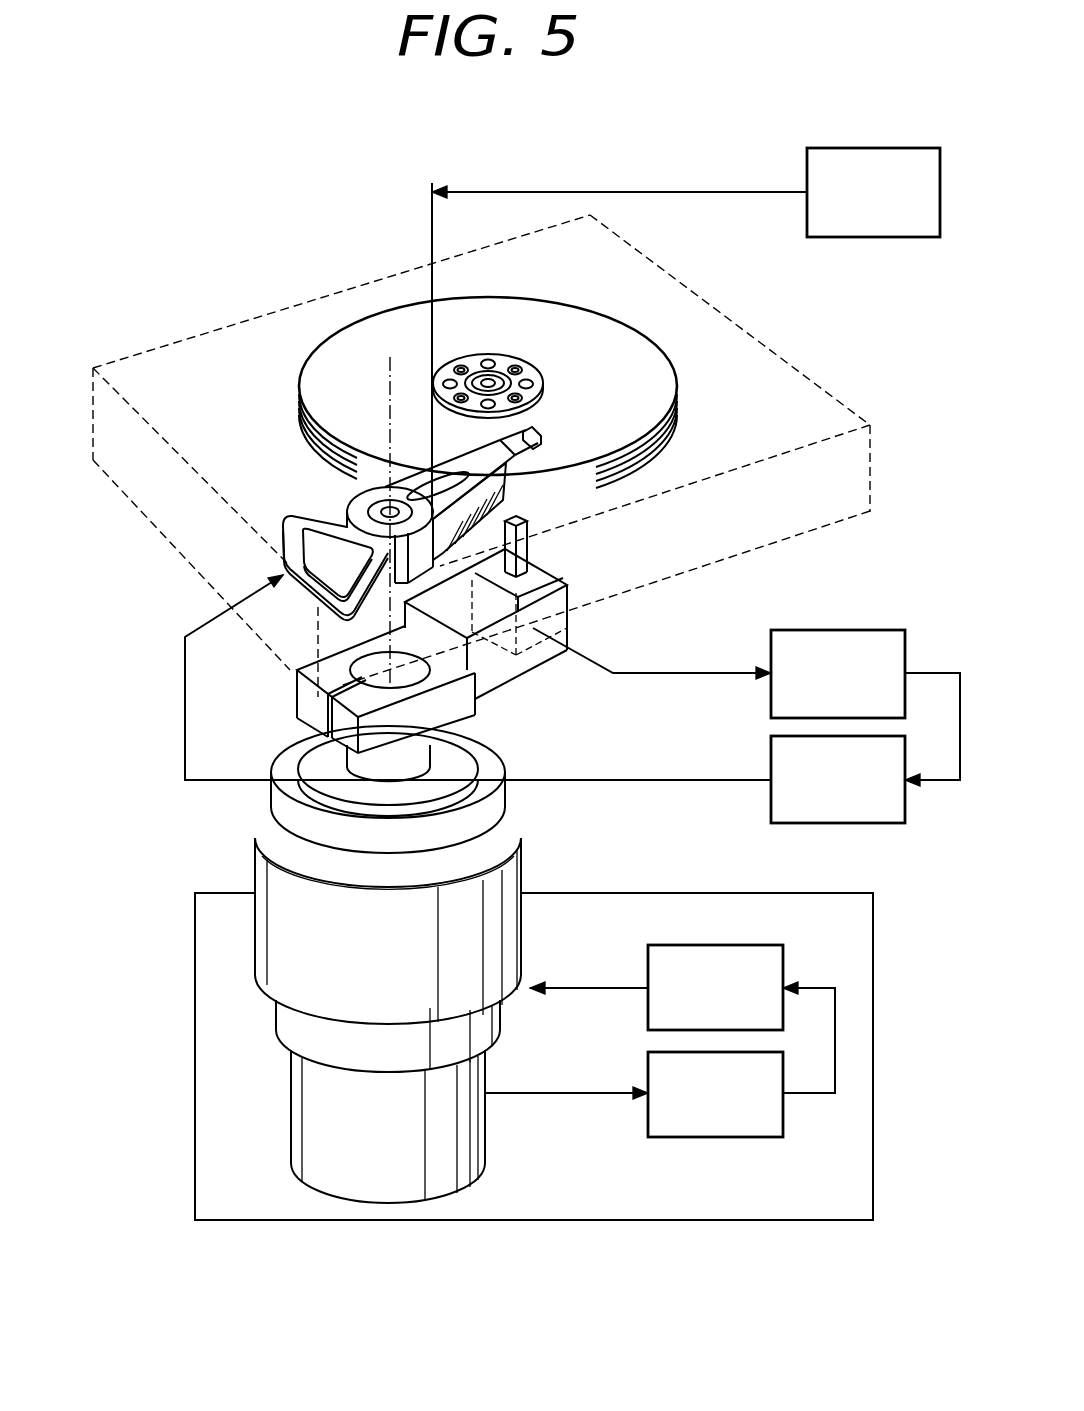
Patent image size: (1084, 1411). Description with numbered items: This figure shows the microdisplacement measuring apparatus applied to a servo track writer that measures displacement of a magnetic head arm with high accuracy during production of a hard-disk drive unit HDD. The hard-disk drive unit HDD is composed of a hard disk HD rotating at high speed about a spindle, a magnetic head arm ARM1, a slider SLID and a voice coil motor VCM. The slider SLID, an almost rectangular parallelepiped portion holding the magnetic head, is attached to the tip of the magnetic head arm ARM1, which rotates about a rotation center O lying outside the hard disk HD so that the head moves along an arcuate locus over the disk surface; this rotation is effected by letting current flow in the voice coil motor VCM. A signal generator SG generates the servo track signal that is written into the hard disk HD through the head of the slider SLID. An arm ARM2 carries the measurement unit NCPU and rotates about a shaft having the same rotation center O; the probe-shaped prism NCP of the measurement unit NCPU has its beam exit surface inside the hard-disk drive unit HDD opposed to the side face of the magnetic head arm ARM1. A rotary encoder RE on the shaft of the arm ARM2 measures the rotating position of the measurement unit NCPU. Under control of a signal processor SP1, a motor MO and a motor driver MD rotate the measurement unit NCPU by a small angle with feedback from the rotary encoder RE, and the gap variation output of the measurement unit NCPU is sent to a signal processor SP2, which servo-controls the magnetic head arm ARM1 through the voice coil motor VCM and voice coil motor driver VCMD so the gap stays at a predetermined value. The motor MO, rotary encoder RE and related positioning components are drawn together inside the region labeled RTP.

The hard-disk drive unit HDD is at (267, 306).
The hard disk HD is at (600, 352).
The rotation center O is at (390, 505).
The signal generator SG is at (686, 334).
The voice coil motor VCM is at (307, 524).
The magnetic head arm ARM1 is at (503, 500).
The slider SLID is at (537, 435).
The probe-shaped prism NCP is at (513, 537).
The measurement unit NCPU is at (553, 602).
The arm ARM2 is at (515, 660).
The signal processor SP2 is at (746, 707).
The voice coil motor driver VCMD is at (545, 699).
The motor MO is at (510, 933).
The rotary encoder RE is at (475, 1128).
The rotary table / positioner unit RTP is at (534, 1056).
The motor driver MD is at (682, 1019).
The signal processor SP1 is at (634, 1094).